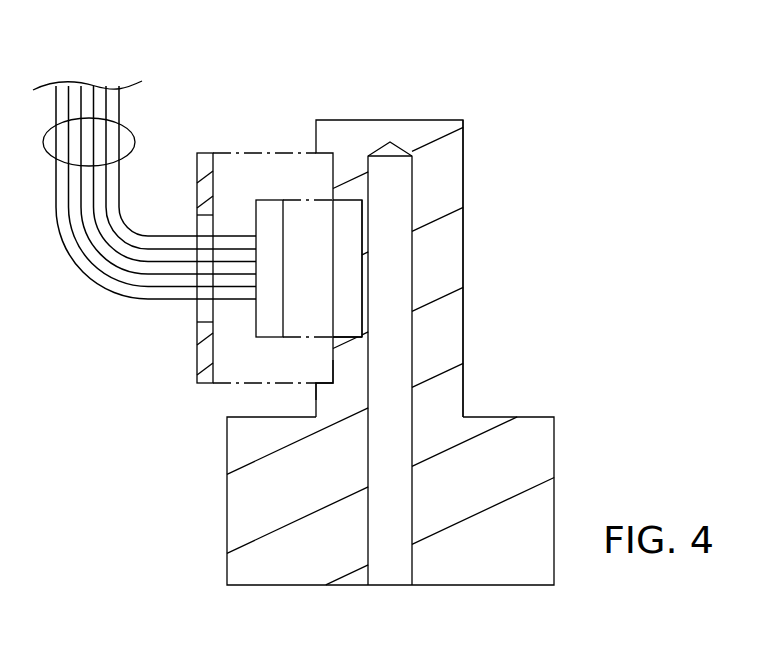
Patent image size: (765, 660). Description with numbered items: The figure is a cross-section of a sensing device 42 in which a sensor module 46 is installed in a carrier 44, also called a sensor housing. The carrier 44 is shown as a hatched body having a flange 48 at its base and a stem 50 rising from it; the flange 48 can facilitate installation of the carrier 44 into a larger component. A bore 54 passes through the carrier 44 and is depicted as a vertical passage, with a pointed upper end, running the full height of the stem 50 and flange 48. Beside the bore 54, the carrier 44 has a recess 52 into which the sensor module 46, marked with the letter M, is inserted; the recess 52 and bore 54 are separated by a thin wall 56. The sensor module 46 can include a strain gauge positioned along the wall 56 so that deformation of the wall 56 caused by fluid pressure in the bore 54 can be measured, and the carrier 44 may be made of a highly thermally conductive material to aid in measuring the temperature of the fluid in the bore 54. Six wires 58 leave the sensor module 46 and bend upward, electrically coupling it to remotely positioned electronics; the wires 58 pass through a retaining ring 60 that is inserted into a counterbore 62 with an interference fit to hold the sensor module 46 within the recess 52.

The sensing device 42 is at (209, 53).
The carrier 44 is at (400, 114).
The sensor module 46 is at (268, 200).
The flange 48 is at (554, 447).
The stem 50 is at (463, 247).
The recess 52 is at (351, 336).
The bore 54 is at (412, 562).
The wall 56 is at (363, 246).
The wires 58 is at (131, 129).
The retaining ring 60 is at (197, 353).
The counterbore 62 is at (327, 383).